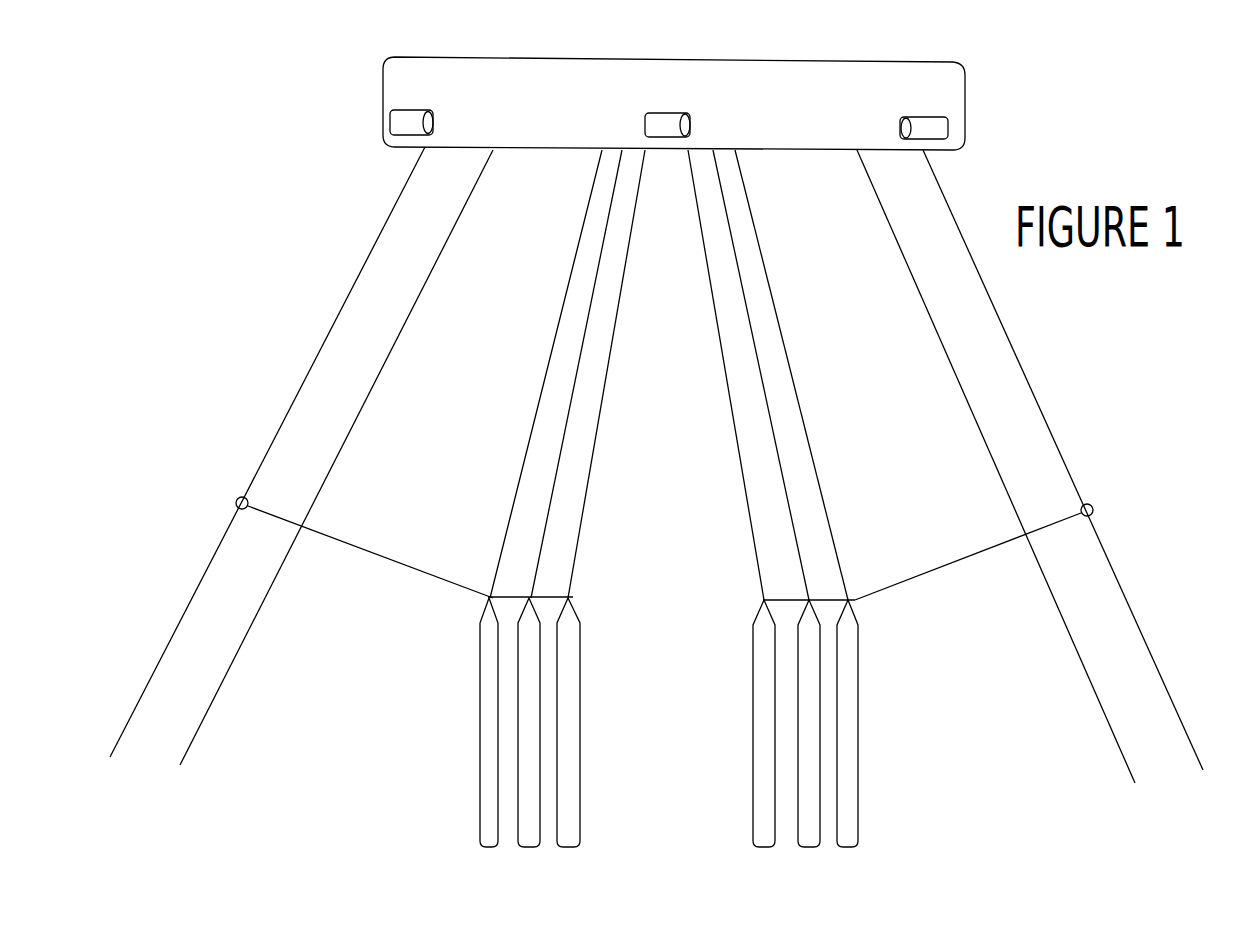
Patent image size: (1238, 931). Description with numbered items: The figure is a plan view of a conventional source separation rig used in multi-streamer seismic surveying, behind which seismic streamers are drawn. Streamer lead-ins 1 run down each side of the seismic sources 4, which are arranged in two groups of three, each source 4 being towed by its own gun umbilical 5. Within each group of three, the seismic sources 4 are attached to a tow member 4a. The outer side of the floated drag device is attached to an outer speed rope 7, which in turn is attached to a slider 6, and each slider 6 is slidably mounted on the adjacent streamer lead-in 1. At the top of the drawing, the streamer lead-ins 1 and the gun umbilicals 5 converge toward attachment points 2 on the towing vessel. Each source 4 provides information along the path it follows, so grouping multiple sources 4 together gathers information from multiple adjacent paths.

The streamer lead-in 1 is at (412, 318).
The attachment slots 2 is at (395, 120).
The seismic source 4 is at (578, 668).
The tow member 4a is at (548, 600).
The gun umbilical 5 is at (547, 368).
The slider 6 is at (238, 497).
The outer speed rope 7 is at (397, 560).